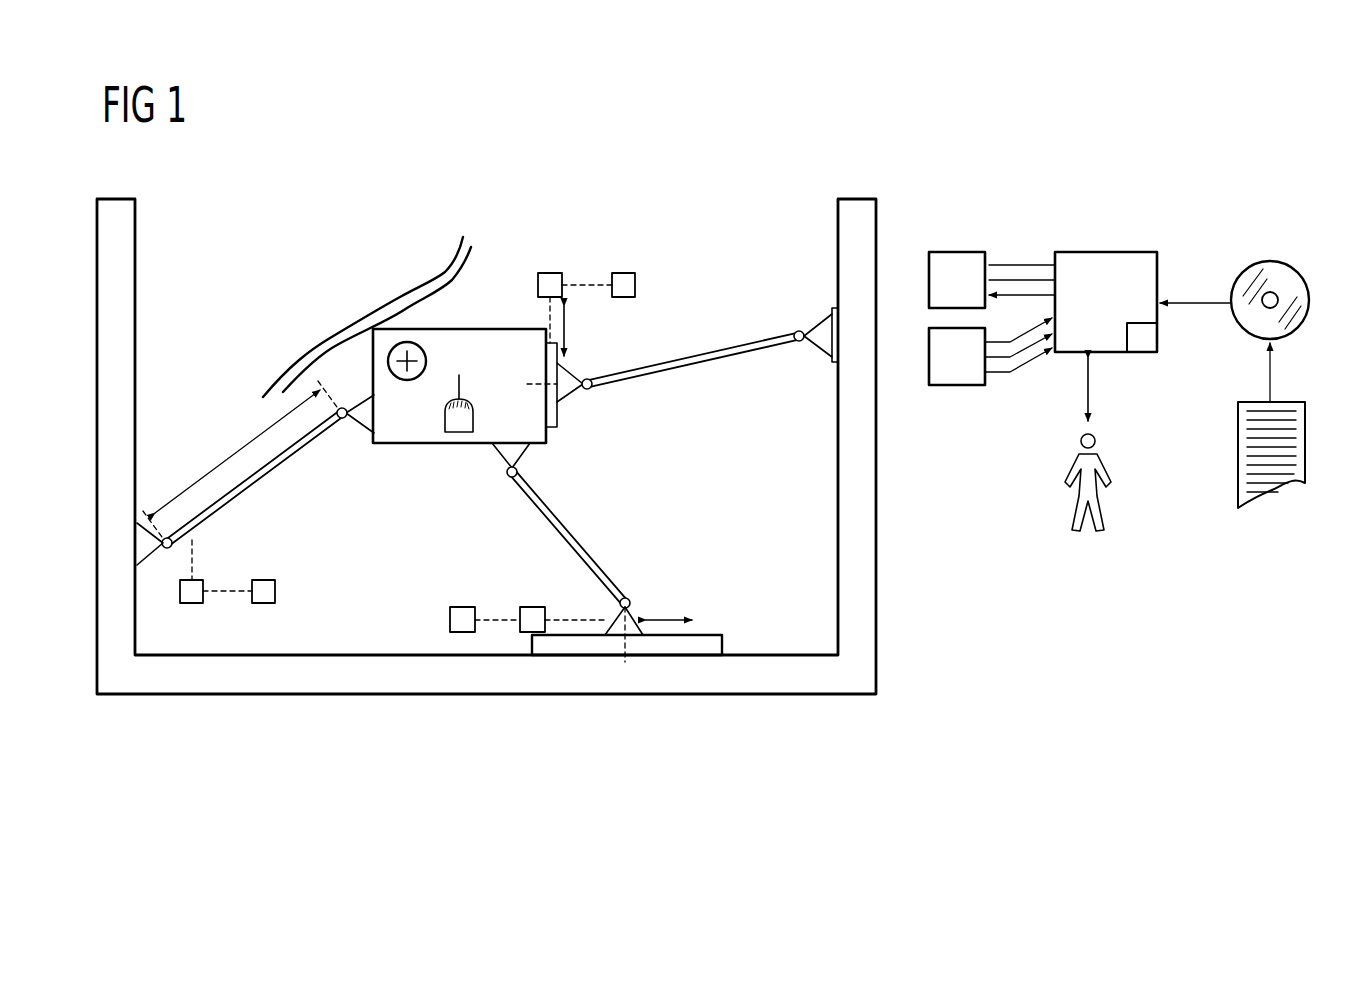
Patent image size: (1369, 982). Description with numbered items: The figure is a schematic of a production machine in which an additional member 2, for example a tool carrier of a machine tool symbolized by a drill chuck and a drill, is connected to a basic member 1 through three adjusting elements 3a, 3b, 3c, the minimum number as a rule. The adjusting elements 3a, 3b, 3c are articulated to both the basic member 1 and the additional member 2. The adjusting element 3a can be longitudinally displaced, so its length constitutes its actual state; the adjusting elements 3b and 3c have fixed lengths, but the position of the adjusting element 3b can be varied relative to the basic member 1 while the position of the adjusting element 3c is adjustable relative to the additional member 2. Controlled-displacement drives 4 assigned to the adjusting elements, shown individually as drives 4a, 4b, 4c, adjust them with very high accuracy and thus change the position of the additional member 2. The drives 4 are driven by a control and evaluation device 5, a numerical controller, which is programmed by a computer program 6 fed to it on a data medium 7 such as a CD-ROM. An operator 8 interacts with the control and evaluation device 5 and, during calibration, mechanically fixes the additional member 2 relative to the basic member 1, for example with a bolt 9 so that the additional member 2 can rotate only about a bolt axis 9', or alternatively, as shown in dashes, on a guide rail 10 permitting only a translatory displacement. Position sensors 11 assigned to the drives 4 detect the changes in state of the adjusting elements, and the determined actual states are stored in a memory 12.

The basic member 1 is at (97, 276).
The additional member 2 is at (484, 328).
The adjusting element 3a is at (282, 463).
The adjusting element 3b is at (552, 505).
The adjusting element 3c is at (726, 343).
The drive 4a is at (195, 580).
The drive 4b is at (532, 606).
The drive 4c is at (550, 272).
The controlled-displacement drives 4 is at (958, 252).
The control and evaluation device 5 is at (1105, 252).
The computer program 6 is at (1305, 432).
The data medium 7 is at (1272, 262).
The operator 8 is at (1102, 498).
The bolt 9 is at (407, 389).
The bolt axis 9' is at (435, 350).
The guide rail 10 is at (397, 296).
The position sensors 11 is at (276, 591).
The memory 12 is at (1142, 354).